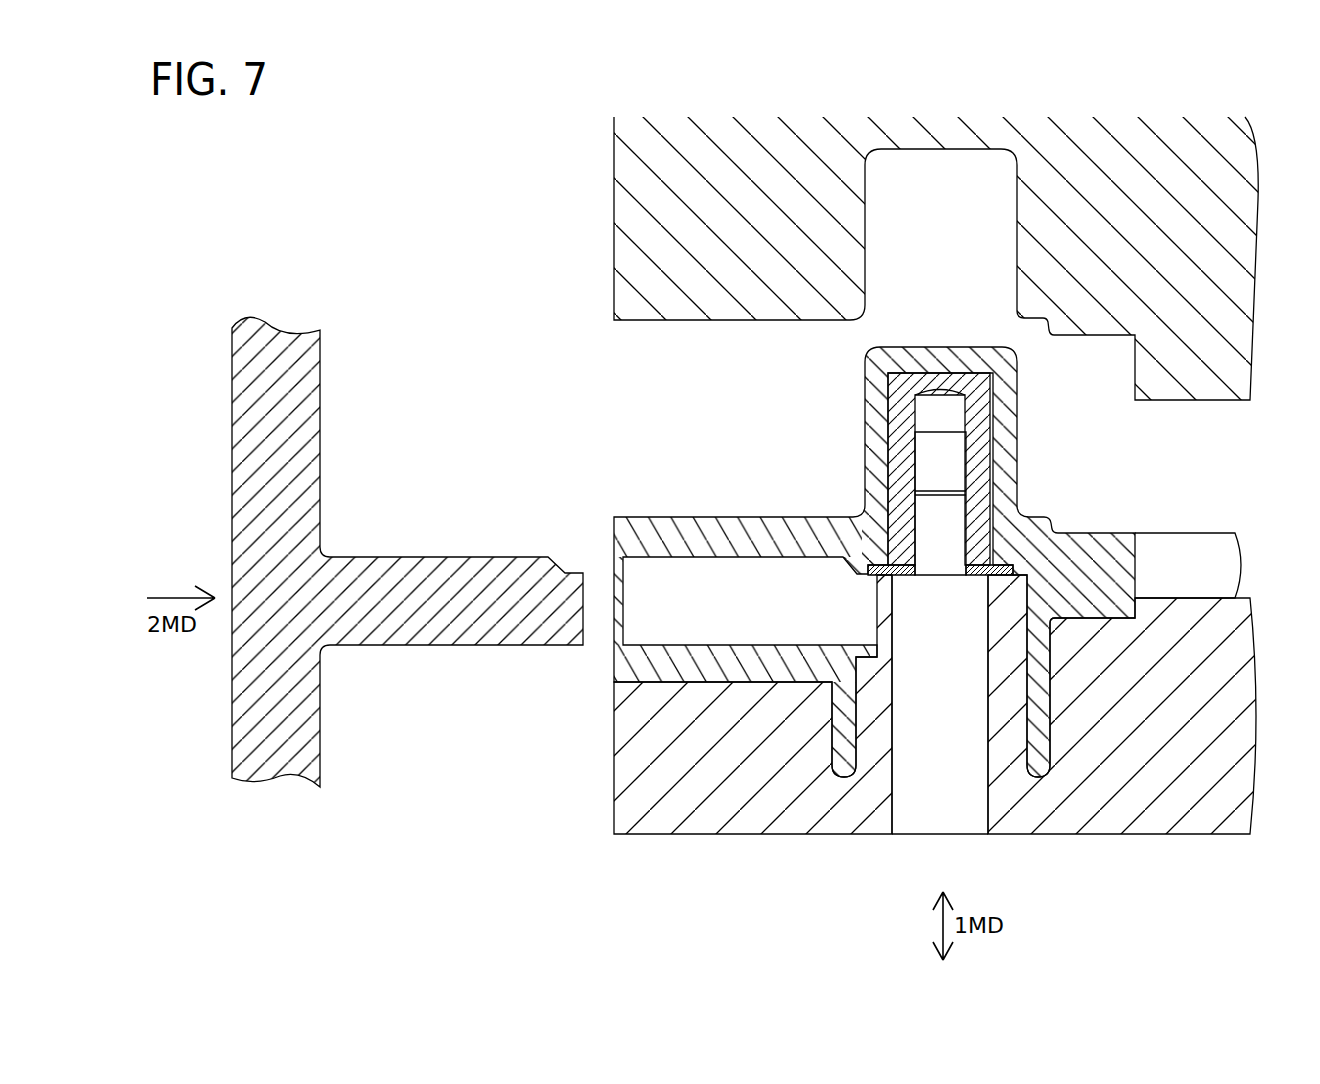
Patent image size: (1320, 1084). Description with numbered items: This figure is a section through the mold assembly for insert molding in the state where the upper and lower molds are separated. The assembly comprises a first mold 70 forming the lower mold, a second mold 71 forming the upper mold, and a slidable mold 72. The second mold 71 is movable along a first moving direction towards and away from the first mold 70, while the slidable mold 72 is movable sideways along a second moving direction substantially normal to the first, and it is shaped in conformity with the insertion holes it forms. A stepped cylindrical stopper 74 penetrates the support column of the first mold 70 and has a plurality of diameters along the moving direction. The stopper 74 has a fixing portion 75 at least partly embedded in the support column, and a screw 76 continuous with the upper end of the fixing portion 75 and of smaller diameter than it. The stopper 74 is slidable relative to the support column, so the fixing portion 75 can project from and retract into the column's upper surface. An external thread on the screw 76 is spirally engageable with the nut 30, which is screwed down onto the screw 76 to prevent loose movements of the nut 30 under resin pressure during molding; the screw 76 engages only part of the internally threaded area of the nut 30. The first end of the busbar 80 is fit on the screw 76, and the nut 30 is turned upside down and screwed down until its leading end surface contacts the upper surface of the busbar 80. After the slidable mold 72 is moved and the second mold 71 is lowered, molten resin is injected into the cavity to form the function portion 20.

The function portion 20 is at (731, 517).
The nut 30 is at (985, 448).
The first mold 70 is at (1227, 708).
The second mold 71 is at (1208, 337).
The slidable mold 72 is at (495, 628).
The stopper 74 is at (950, 834).
The fixing portion 75 is at (962, 775).
The screw 76 is at (958, 515).
The busbar 80 is at (1013, 567).